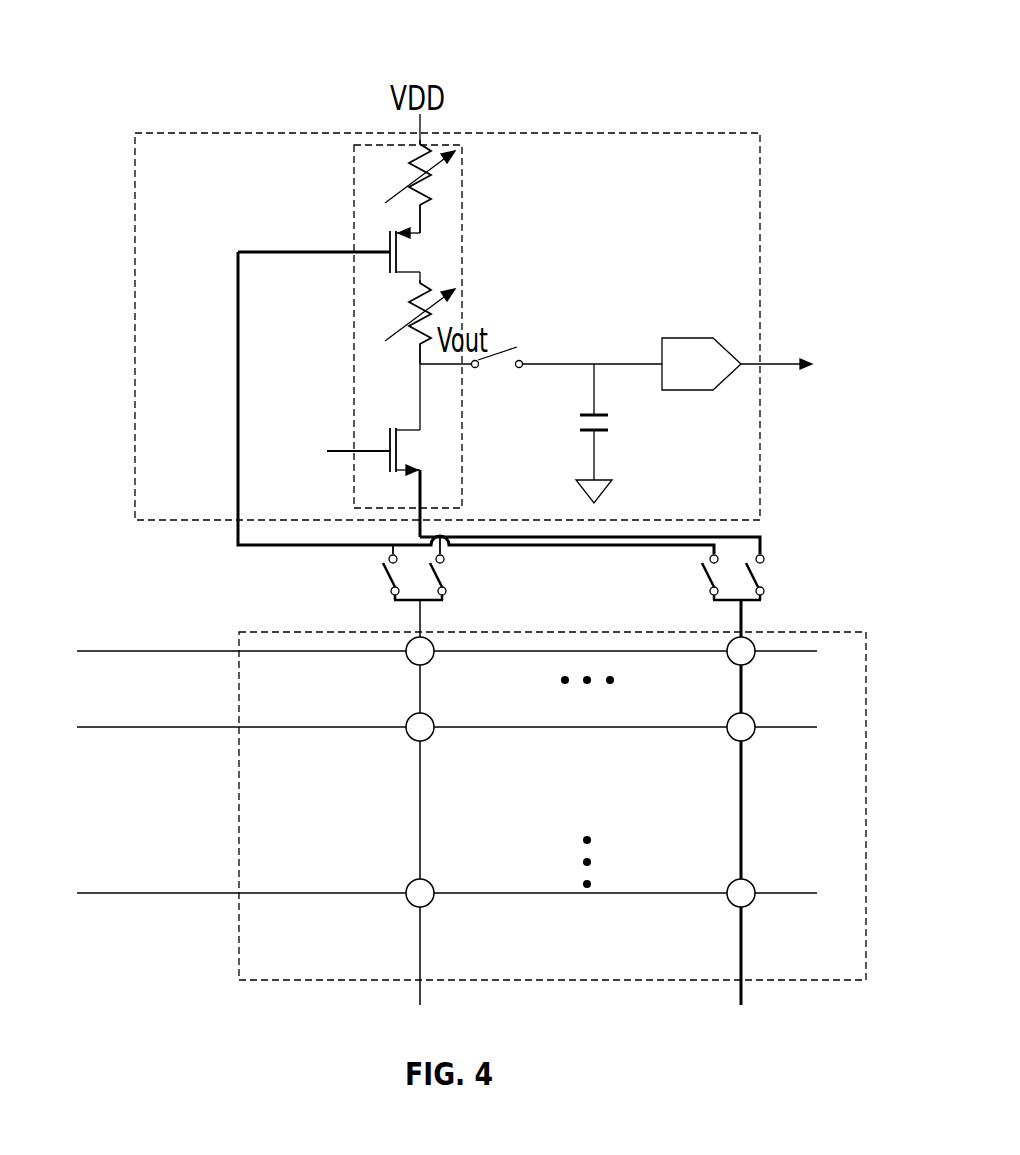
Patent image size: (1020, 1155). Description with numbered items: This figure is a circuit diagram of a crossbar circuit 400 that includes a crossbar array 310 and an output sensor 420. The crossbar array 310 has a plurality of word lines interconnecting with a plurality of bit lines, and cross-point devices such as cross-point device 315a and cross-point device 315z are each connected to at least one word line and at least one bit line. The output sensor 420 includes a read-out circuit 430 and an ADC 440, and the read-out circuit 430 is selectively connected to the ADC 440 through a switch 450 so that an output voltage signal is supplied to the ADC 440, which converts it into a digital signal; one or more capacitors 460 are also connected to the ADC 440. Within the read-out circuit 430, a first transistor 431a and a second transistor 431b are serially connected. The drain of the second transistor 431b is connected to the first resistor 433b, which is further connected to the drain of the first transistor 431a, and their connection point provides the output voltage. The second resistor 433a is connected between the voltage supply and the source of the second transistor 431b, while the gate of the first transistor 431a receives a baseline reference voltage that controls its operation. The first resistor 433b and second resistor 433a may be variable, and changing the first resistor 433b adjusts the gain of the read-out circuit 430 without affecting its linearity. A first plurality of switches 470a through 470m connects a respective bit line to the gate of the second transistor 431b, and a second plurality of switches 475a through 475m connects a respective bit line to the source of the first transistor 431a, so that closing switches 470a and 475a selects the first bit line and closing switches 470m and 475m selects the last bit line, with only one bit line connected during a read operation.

The crossbar circuit 400 is at (160, 56).
The output sensor 420 is at (762, 196).
The read-out circuit 430 is at (463, 217).
The second resistor 433a is at (410, 158).
The second transistor 431b is at (390, 262).
The first resistor 433b is at (405, 303).
The first transistor 431a is at (410, 446).
The switch 450 is at (506, 345).
The ADC 440 is at (682, 338).
The capacitor 460 is at (600, 432).
The switch 470a is at (385, 592).
The switch 475a is at (446, 588).
The switch 470m is at (706, 590).
The switch 475m is at (764, 588).
The crossbar array 310 is at (835, 632).
The cross-point device 315a is at (430, 640).
The cross-point device 315z is at (750, 884).